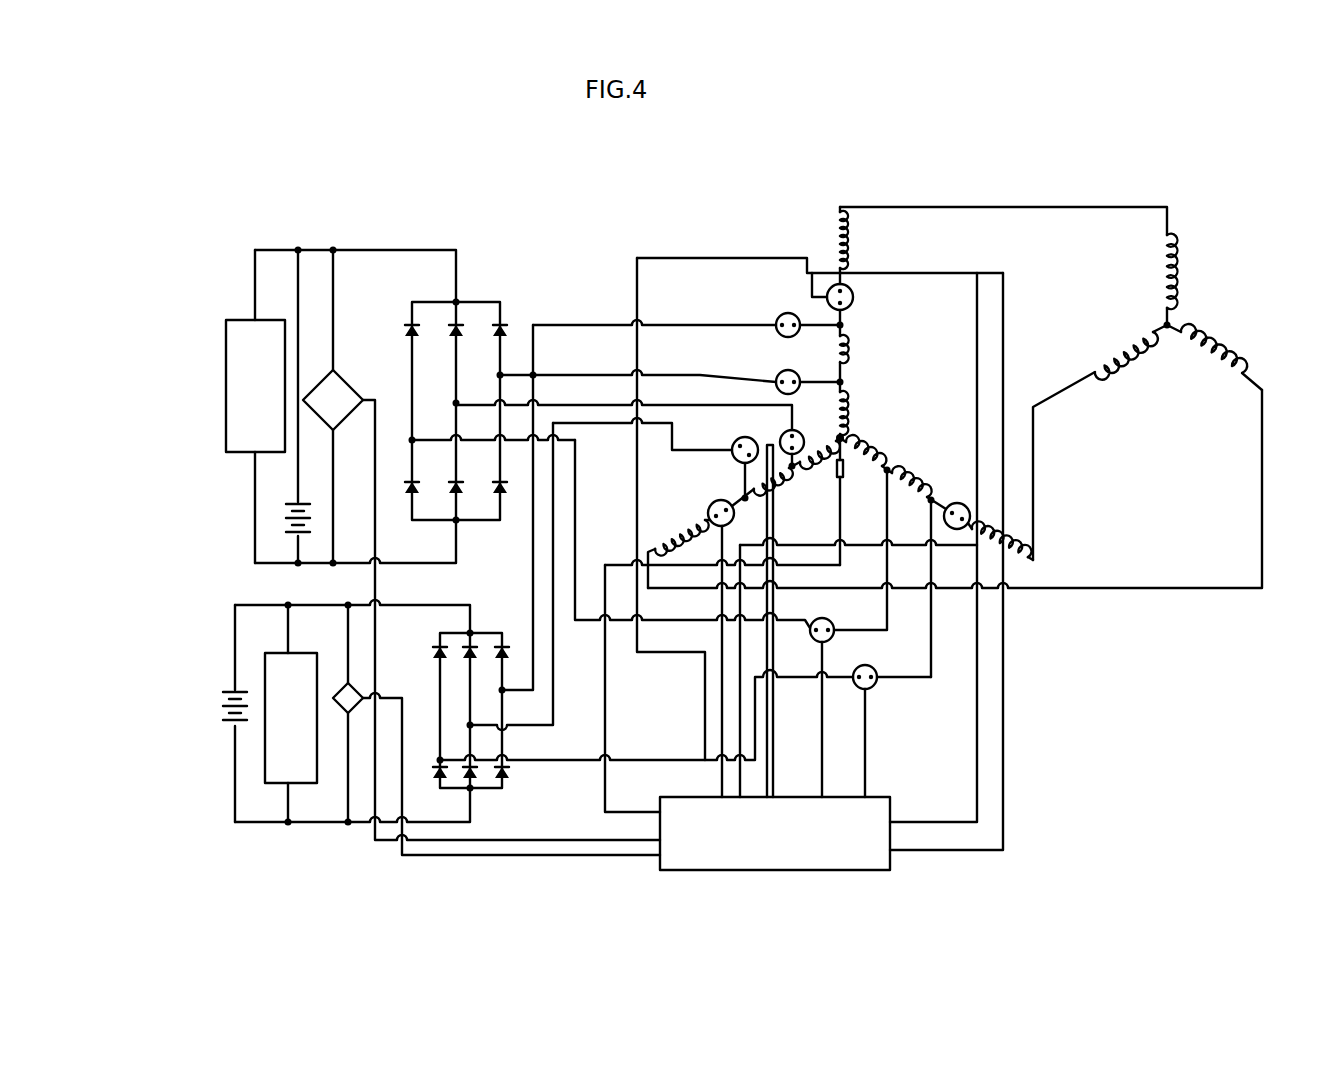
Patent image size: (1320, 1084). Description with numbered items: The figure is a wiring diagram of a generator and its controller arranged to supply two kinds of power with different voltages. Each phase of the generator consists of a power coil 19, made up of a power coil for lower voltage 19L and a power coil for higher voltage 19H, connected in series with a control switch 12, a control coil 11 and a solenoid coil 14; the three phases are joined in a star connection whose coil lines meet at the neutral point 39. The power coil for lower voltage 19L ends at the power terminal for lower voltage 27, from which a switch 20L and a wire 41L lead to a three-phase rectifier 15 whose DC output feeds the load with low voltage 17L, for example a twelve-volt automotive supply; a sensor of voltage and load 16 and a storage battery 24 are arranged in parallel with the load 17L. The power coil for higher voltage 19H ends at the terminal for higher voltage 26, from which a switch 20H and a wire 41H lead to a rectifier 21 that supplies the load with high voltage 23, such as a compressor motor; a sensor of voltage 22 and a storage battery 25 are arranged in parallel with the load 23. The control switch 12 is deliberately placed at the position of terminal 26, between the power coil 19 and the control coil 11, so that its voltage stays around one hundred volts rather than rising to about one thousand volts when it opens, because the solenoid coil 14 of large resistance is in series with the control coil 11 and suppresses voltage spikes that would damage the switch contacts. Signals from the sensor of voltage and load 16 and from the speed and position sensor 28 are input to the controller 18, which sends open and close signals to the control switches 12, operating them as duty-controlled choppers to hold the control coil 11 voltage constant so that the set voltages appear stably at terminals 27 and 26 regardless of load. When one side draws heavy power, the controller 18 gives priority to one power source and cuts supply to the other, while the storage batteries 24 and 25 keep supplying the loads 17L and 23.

The control coil 11 is at (838, 214).
The control switch 12 is at (850, 288).
The solenoid coil 14 is at (1190, 327).
The rectifier 15 is at (478, 300).
The sensor of voltage and load 16 is at (345, 390).
The load with low voltage 17L is at (237, 380).
The controller 18 is at (770, 849).
The power coil 19 is at (833, 356).
The power coil for higher voltage 19H is at (768, 443).
The power coil for lower voltage 19L is at (830, 436).
The switch 20H is at (781, 314).
The switch 20L is at (779, 372).
The rectifier 21 is at (485, 790).
The sensor of voltage 22 is at (345, 714).
The load with high voltage 23 is at (308, 738).
The storage battery 24 is at (285, 520).
The storage battery 25 is at (235, 704).
The terminal for higher voltage 26 is at (845, 325).
The power terminal for lower voltage 27 is at (848, 383).
The speed and position sensor 28 is at (837, 470).
The neutral point 39 is at (845, 437).
The wire for higher voltage 41H is at (530, 585).
The wire for lower voltage 41L is at (605, 463).